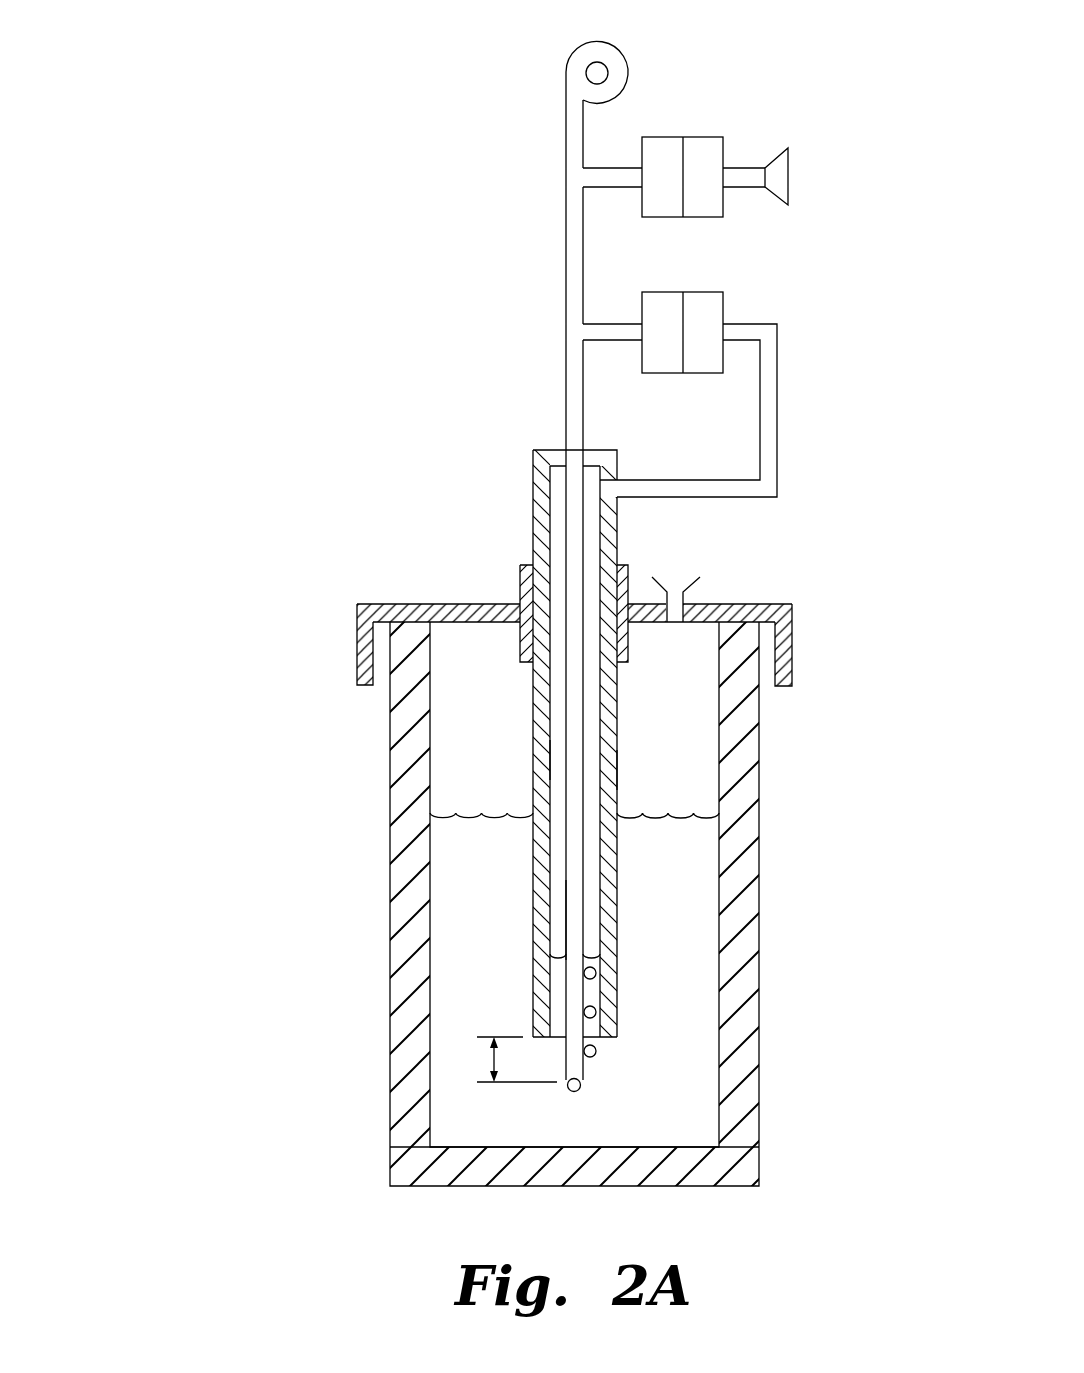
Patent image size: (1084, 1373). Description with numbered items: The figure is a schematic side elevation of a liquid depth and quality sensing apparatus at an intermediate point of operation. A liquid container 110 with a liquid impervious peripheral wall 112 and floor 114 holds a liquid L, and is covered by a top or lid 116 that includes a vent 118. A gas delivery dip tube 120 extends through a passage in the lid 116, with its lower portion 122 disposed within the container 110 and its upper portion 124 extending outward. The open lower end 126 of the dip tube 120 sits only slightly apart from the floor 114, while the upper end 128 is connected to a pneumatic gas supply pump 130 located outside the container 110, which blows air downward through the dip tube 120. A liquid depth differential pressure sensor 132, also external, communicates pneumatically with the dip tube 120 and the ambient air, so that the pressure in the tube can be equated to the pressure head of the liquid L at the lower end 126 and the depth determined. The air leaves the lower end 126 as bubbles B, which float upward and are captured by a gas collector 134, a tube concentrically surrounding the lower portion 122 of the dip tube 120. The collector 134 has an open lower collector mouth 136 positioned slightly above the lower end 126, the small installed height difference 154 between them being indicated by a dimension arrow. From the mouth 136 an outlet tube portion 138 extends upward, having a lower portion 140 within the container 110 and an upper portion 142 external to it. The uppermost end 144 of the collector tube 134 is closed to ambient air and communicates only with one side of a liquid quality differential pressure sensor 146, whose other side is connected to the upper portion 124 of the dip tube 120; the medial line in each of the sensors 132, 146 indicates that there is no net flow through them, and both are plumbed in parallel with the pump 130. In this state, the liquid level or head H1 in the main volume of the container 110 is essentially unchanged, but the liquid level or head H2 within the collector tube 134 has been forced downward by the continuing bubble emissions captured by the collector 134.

The liquid container 110 is at (246, 984).
The peripheral wall 112 is at (390, 853).
The floor 114 is at (457, 1187).
The top or lid 116 is at (435, 604).
The vent 118 is at (678, 570).
The gas delivery dip tube 120 is at (565, 705).
The lower portion of dip tube 122 is at (565, 918).
The upper portion of dip tube 124 is at (566, 253).
The open lower end of dip tube 126 is at (567, 1083).
The upper end of dip tube 128 is at (566, 113).
The pneumatic gas supply pump 130 is at (566, 65).
The liquid depth differential pressure sensor 132 is at (667, 137).
The gas collector 134 is at (618, 712).
The lower collector mouth 136 is at (533, 1030).
The outlet tube portion 138 is at (618, 768).
The lower portion of outlet tube 140 is at (533, 758).
The upper portion of outlet tube 142 is at (533, 480).
The uppermost end of collector tube 144 is at (548, 450).
The liquid quality differential pressure sensor 146 is at (662, 292).
The installed height difference 154 is at (490, 1057).
The bubbles B is at (597, 1012).
The liquid L is at (668, 878).
The liquid level or head in container H1 is at (720, 814).
The liquid level or head in collector tube H2 is at (617, 955).